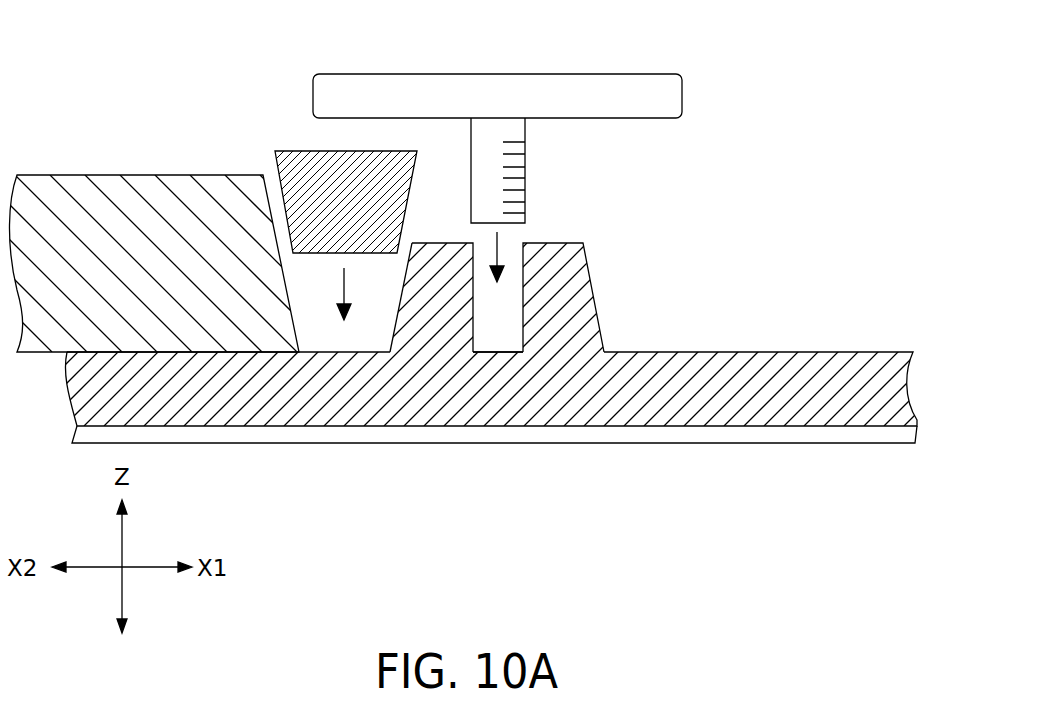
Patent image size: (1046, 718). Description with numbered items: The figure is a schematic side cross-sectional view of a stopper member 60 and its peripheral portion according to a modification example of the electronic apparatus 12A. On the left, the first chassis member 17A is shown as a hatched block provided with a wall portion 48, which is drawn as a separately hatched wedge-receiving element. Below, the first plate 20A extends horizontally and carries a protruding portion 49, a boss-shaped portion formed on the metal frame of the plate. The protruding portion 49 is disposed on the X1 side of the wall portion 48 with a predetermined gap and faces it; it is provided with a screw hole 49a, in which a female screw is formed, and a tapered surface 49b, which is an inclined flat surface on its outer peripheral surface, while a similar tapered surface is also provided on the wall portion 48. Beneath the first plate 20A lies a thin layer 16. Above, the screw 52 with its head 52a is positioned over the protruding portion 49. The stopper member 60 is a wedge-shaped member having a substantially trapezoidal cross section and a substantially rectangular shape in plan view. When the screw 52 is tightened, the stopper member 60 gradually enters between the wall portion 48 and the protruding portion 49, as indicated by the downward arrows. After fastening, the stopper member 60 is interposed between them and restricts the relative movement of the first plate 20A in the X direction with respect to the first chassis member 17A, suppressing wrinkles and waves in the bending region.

The manufacturing apparatus 12A is at (98, 26).
The first chassis member 17A is at (126, 162).
The wall portion 48 is at (284, 193).
The stopper member 60 is at (332, 136).
The screw 52 is at (497, 146).
The holding surface 52a is at (573, 86).
The protruding portion 49 is at (471, 341).
The screw hole 49a is at (473, 318).
The tapered surface 49b is at (398, 313).
The first plate 20A is at (490, 341).
The substrate 16 is at (800, 458).